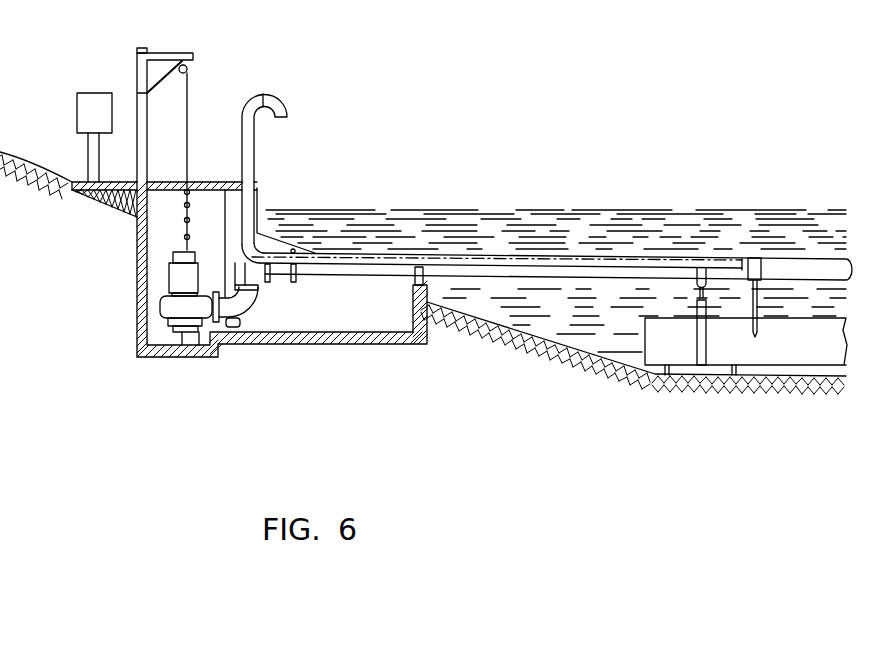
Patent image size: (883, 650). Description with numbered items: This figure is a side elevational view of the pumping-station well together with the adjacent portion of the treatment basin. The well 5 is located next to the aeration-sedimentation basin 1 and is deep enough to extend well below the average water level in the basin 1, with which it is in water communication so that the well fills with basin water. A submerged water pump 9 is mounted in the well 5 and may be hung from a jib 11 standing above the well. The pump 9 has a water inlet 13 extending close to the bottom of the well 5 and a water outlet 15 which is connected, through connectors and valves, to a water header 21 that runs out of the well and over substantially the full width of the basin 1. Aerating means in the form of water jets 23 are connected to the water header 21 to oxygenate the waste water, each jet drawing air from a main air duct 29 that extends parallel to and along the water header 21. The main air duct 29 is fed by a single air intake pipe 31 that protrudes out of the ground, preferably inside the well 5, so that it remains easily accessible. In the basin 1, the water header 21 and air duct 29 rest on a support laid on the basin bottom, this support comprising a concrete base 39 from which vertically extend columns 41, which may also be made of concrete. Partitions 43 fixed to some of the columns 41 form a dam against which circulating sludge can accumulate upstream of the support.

The aeration-sedimentation basin 1 is at (517, 374).
The well 5 is at (126, 288).
The submerged water pump 9 is at (167, 313).
The jib 11 is at (160, 50).
The water inlet 13 is at (188, 333).
The water outlet 15 is at (216, 322).
The water header 21 is at (323, 274).
The water jet 23 is at (699, 294).
The main air duct 29 is at (562, 260).
The air intake pipe 31 is at (283, 103).
The concrete base 39 is at (708, 379).
The columns 41 is at (697, 328).
The partitions 43 is at (849, 306).